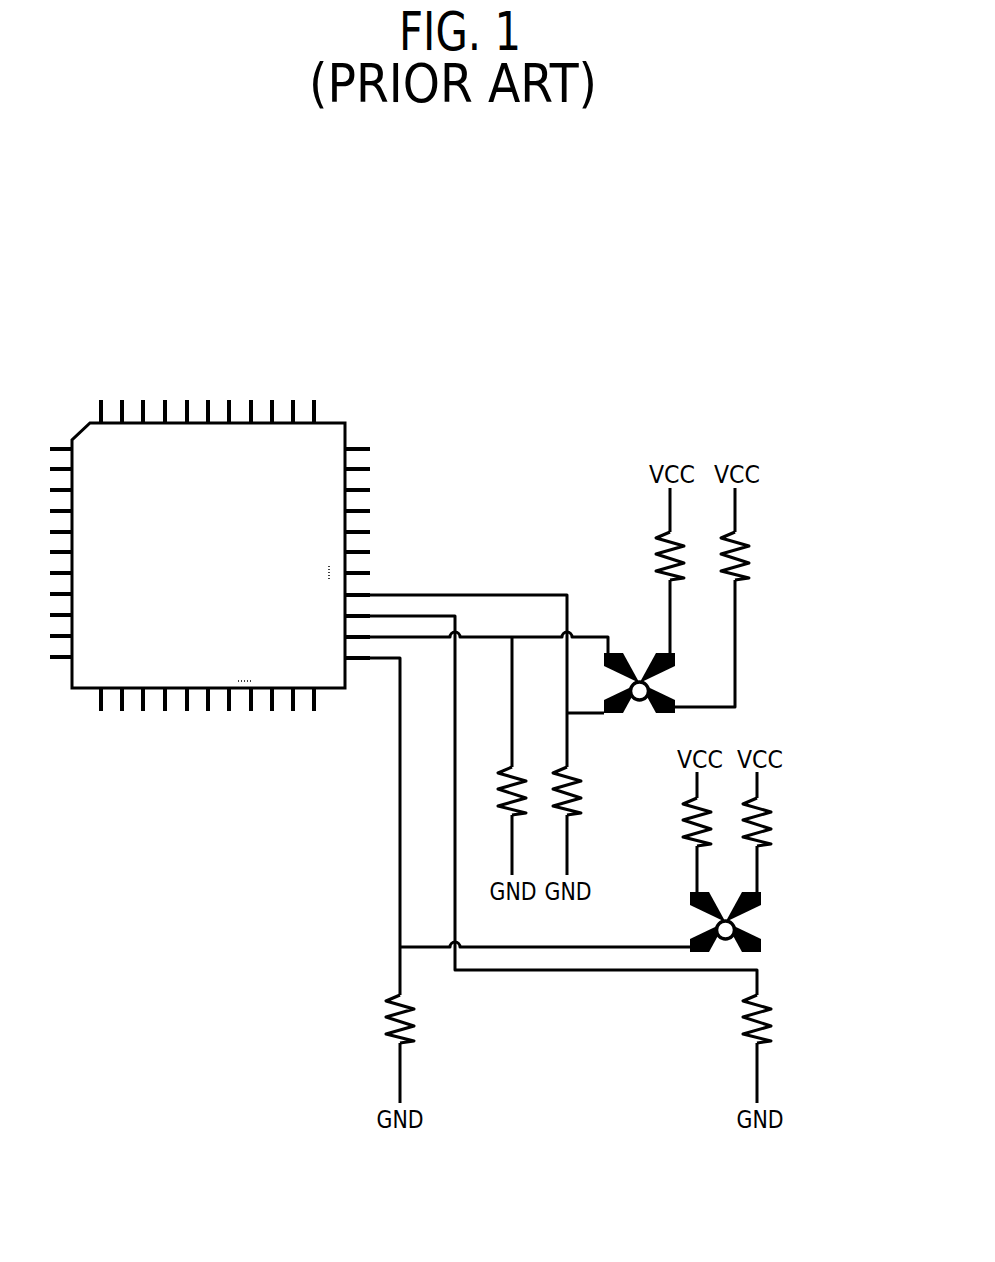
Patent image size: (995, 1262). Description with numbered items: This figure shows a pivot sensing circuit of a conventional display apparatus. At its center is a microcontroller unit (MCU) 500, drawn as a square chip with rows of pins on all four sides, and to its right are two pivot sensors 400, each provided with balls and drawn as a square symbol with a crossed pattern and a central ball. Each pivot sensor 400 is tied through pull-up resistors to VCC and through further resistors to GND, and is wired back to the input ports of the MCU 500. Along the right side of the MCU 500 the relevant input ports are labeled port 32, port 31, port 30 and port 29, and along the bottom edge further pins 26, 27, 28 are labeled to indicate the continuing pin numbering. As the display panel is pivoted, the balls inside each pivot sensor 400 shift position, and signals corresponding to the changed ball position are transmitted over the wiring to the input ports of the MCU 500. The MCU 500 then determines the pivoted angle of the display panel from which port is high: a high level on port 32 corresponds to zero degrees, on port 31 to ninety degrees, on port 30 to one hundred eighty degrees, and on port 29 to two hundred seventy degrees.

The microcontroller unit 500 is at (358, 381).
The pivot sensor 400 is at (638, 655).
The port 32 is at (345, 595).
The port 31 is at (345, 616).
The port 30 is at (345, 636).
The port 29 is at (345, 657).
The MCU pin 28 is at (306, 688).
The MCU pin 27 is at (285, 688).
The MCU pin 26 is at (264, 688).